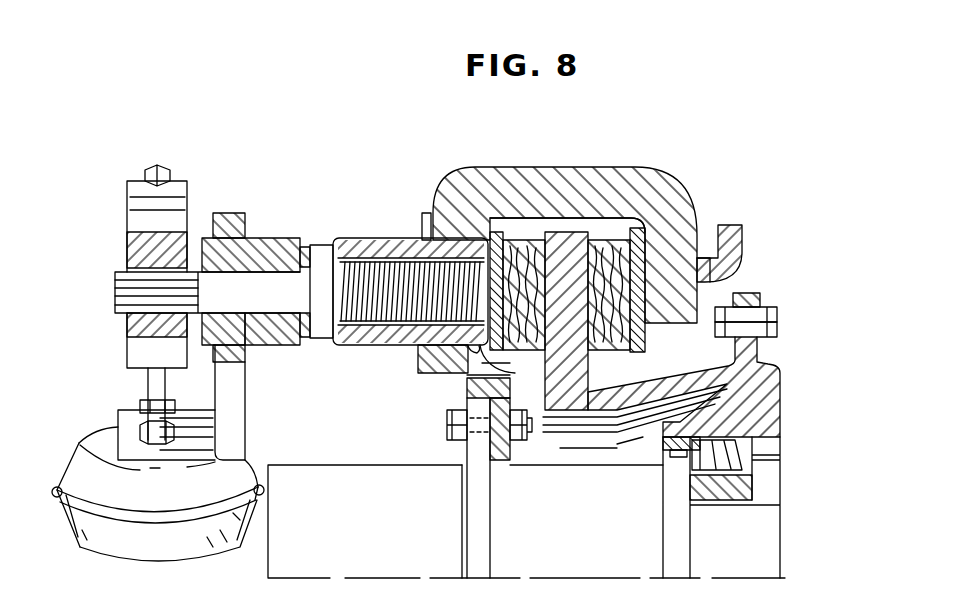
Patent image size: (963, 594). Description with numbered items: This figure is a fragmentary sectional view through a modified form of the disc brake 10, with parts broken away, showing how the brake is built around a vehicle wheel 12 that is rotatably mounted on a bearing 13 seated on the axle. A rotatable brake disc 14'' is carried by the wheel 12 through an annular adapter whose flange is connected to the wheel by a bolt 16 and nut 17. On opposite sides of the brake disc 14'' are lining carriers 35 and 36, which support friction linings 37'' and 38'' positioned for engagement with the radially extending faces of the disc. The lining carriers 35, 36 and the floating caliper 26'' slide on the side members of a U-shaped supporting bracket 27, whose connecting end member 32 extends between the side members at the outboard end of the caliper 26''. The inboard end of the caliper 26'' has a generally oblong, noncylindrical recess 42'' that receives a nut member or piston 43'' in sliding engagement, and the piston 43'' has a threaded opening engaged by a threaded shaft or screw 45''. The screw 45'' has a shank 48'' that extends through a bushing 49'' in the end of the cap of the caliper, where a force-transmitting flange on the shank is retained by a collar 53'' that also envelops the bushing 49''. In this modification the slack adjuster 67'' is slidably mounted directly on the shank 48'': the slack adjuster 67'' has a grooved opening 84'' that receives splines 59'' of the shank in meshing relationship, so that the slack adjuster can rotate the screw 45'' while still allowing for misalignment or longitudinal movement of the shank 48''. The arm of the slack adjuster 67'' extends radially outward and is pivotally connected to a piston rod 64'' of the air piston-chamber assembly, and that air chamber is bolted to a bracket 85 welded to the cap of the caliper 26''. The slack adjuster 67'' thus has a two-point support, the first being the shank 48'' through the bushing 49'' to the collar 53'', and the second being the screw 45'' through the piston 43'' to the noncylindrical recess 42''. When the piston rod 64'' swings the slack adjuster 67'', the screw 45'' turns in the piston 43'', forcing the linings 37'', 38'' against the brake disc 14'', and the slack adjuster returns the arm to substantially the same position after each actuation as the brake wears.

The grooved opening 84'' is at (133, 218).
The slack adjuster 67'' is at (121, 337).
The splines 59'' is at (180, 284).
The piston rod 64'' is at (121, 404).
The bushing 49'' is at (266, 260).
The collar 53'' is at (250, 223).
The shank 48'' is at (272, 351).
The piston 43'' is at (402, 267).
The screw 45'' is at (394, 325).
The noncylindrical recess 42'' is at (407, 205).
The caliper 26'' is at (545, 235).
The lining carrier 36 is at (653, 230).
The lining carrier 35 is at (495, 240).
The friction lining 37'' is at (535, 240).
The brake disc 14'' is at (581, 270).
The friction lining 38'' is at (635, 244).
The disc brake 10 is at (722, 178).
The supporting bracket 27 is at (745, 240).
The end member 32 is at (728, 262).
The nut 17 is at (775, 316).
The bolt 16 is at (722, 338).
The wheel 12 is at (768, 383).
The bearing 13 is at (755, 470).
The bracket 85 is at (237, 435).